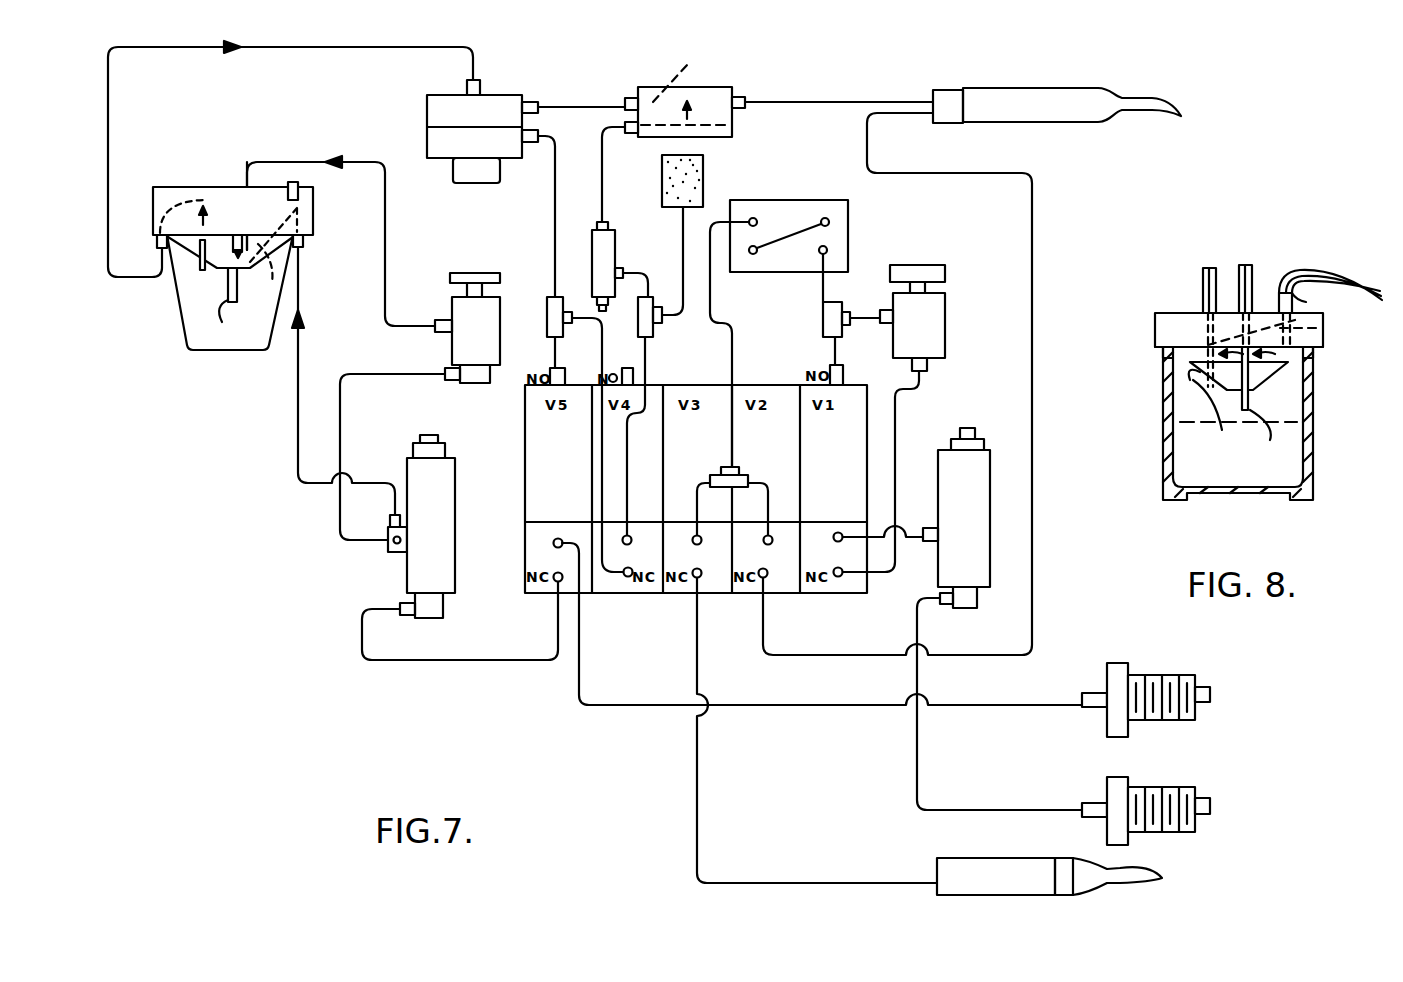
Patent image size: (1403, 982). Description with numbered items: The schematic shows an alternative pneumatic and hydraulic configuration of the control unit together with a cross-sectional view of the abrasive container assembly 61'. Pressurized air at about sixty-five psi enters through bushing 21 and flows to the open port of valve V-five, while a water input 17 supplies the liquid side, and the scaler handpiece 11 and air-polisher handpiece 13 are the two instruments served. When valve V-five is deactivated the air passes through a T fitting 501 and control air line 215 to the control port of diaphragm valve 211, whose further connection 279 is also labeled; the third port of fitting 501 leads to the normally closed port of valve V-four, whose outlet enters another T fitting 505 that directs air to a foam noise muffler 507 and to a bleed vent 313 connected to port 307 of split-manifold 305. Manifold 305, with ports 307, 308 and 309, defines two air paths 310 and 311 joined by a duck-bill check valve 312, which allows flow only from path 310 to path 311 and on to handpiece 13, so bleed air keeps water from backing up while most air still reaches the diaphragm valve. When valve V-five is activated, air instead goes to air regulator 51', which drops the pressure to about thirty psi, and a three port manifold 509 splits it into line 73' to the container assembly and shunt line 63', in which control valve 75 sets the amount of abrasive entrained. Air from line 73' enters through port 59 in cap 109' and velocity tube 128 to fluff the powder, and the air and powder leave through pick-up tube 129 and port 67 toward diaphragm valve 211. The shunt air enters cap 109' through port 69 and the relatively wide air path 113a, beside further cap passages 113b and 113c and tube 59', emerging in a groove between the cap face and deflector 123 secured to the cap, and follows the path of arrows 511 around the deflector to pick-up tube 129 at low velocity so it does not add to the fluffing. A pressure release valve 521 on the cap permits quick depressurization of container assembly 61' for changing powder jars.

In FIG. 7, the diaphragm valve 211 is at (425, 105).
In FIG. 7, the outlet port 279 is at (546, 128).
In FIG. 7, the control air line 215 is at (555, 215).
In FIG. 7, the split-manifold 305 is at (712, 84).
In FIG. 7, the port 307 is at (626, 124).
In FIG. 7, the port 308 is at (628, 99).
In FIG. 7, the port 309 is at (741, 109).
In FIG. 7, the air path 310 is at (656, 136).
In FIG. 7, the air path 311 is at (672, 72).
In FIG. 7, the duck-bill check valve 312 is at (705, 115).
In FIG. 7, the air-polisher handpiece 13 is at (1089, 88).
In FIG. 7, the foam noise muffler 507 is at (702, 178).
In FIG. 7, the bleed vent 313 is at (607, 266).
In FIG. 7, the T fitting 505 is at (651, 325).
In FIG. 7, the T fitting 501 is at (553, 304).
In FIG. 7, the control valve 75 is at (528, 330).
In FIG. 7, the shunt line 63' is at (346, 348).
In FIG. 8, the shunt line 63' is at (1332, 277).
In FIG. 7, the line 73' is at (315, 381).
In FIG. 8, the line 73' is at (1236, 285).
In FIG. 7, the three port manifold 509 is at (391, 532).
In FIG. 7, the air regulator 51' is at (447, 526).
In FIG. 7, the cap 109' is at (211, 268).
In FIG. 8, the cap 109' is at (1206, 333).
In FIG. 7, the cap passage 113b is at (200, 212).
In FIG. 8, the cap passage 113b is at (1185, 358).
In FIG. 7, the port 67 is at (157, 240).
In FIG. 8, the port 67 is at (1203, 300).
In FIG. 7, the port 59 is at (321, 244).
In FIG. 7, the pressure release valve 521 is at (298, 184).
In FIG. 7, the pick-up tube 129 is at (200, 270).
In FIG. 8, the pick-up tube 129 is at (1200, 420).
In FIG. 7, the cap passage 113c is at (257, 285).
In FIG. 8, the cap passage 113c is at (1210, 338).
In FIG. 7, the velocity tube 128 is at (243, 323).
In FIG. 8, the velocity tube 128 is at (1255, 435).
In FIG. 7, the bushing 21 is at (1178, 645).
In FIG. 7, the water input connector 17 is at (1038, 805).
In FIG. 7, the scaler handpiece 11 is at (1043, 858).
In FIG. 8, the container assembly 61' is at (1276, 423).
In FIG. 8, the arrows 511 is at (1190, 390).
In FIG. 8, the outlet tube 59' is at (1292, 287).
In FIG. 8, the port 69 is at (1305, 302).
In FIG. 8, the deflector 123 is at (1278, 375).
In FIG. 8, the air path 113a is at (1323, 330).